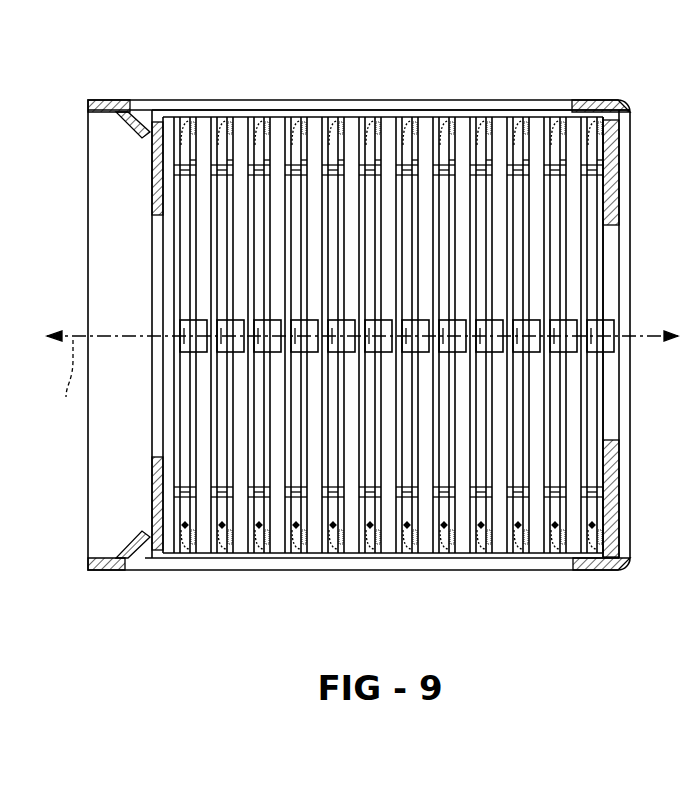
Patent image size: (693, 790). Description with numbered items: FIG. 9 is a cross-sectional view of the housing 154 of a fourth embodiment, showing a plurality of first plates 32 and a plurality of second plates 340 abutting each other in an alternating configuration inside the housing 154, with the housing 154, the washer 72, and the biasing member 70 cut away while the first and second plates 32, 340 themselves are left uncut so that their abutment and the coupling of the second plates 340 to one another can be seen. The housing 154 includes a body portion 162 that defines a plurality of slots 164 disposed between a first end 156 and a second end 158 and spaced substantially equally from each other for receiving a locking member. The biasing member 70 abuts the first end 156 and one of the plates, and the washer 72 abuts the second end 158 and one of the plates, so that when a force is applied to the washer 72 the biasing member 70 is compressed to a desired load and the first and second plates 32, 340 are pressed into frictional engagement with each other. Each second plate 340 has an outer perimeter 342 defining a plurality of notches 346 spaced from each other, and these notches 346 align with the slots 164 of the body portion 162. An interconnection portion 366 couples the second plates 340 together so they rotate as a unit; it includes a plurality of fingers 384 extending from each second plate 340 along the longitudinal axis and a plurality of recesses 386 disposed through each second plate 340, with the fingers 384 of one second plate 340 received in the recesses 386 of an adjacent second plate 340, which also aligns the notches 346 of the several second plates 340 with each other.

The first plates 32 is at (231, 172).
The biasing member 70 is at (152, 492).
The washer 72 is at (606, 478).
The housing 154 is at (588, 100).
The first end 156 is at (103, 572).
The second end 158 is at (636, 530).
The body portion 162 is at (578, 572).
The slots 164 is at (370, 105).
The second plates 340 is at (203, 280).
The outer perimeter 342 is at (192, 210).
The notches 346 is at (535, 150).
The interconnection portion 366 is at (636, 344).
The fingers 384 is at (553, 117).
The recesses 386 is at (315, 117).